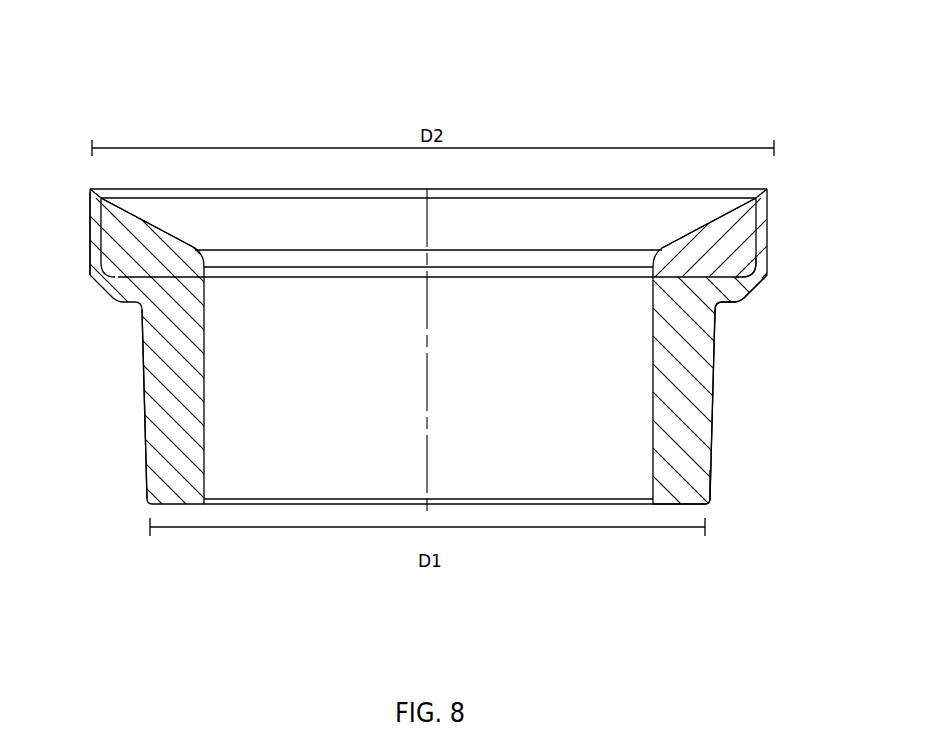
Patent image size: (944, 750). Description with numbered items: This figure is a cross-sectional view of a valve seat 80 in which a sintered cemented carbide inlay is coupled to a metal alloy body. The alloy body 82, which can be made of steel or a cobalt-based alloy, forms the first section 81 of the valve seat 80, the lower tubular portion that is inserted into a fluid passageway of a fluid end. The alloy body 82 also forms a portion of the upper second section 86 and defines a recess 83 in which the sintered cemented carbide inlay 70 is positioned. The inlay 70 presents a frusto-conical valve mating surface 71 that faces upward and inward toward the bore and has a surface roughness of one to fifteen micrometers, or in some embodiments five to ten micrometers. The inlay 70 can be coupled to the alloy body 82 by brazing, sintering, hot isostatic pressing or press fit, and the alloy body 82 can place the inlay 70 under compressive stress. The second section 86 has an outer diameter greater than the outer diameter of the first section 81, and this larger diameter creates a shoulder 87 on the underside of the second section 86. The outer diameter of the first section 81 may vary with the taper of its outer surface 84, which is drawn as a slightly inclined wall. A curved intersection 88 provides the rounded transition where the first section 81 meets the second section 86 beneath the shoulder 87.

The valve seat 80 is at (198, 88).
The sintered cemented carbide inlay 70 is at (728, 235).
The frusto-conical valve mating surface 71 is at (152, 224).
The first section 81 is at (110, 308).
The alloy body 82 is at (687, 482).
The recess 83 is at (745, 273).
The outer surface 84 is at (713, 398).
The second section 86 is at (71, 192).
The shoulder 87 is at (744, 302).
The curved intersection 88 is at (718, 308).